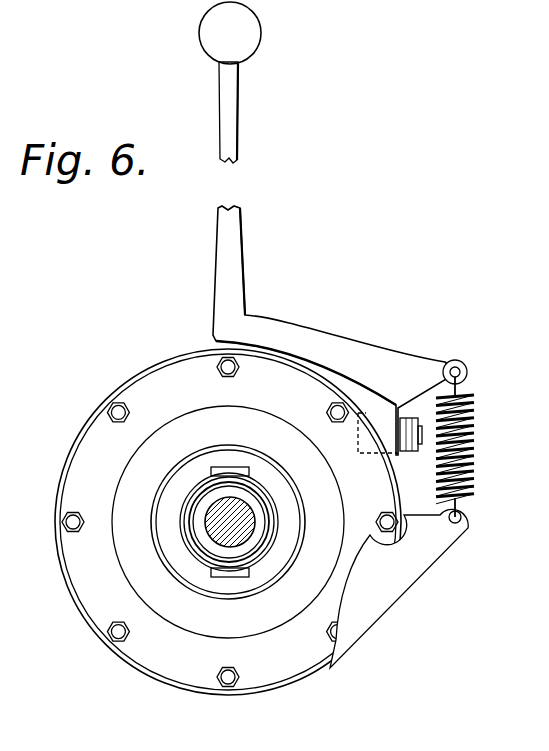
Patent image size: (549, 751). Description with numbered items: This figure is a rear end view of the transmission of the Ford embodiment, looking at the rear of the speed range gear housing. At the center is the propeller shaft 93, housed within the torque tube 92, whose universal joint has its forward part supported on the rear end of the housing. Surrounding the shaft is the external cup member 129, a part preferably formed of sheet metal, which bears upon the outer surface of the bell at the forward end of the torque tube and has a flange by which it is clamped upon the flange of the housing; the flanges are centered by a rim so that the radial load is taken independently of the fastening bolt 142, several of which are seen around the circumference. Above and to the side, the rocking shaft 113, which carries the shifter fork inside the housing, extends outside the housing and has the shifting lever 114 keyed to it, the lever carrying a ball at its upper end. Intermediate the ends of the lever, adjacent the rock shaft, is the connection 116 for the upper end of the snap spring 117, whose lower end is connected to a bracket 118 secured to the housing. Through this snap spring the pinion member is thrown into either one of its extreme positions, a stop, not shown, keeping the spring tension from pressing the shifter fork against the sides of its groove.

The shifting lever 114 is at (232, 264).
The rocking shaft 113 is at (408, 420).
The connection for the upper end of the snap spring 116 is at (467, 369).
The snap spring 117 is at (470, 490).
The bracket 118 is at (468, 516).
The fastening bolt 142 is at (116, 620).
The torque tube 92 is at (193, 538).
The propeller shaft 93 is at (222, 530).
The external cup member 129 is at (190, 612).